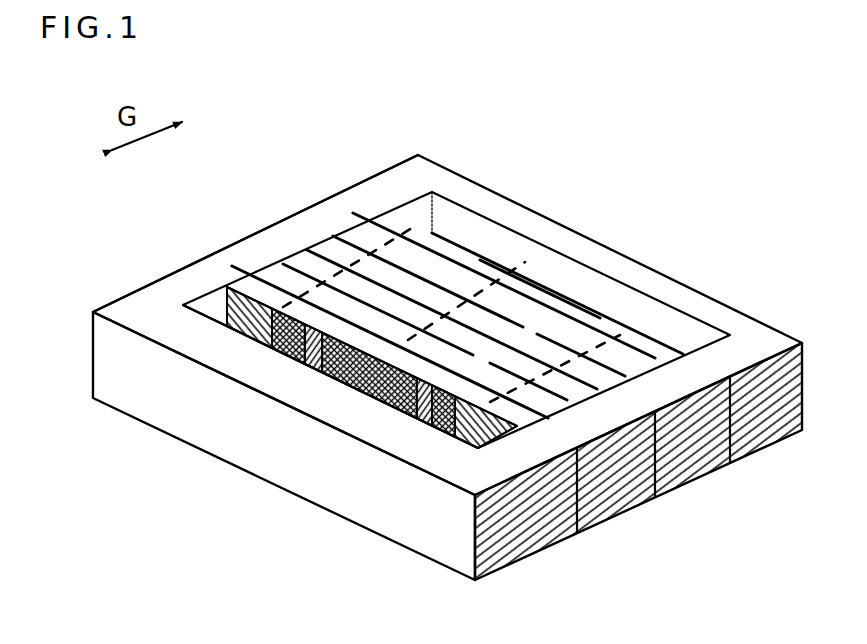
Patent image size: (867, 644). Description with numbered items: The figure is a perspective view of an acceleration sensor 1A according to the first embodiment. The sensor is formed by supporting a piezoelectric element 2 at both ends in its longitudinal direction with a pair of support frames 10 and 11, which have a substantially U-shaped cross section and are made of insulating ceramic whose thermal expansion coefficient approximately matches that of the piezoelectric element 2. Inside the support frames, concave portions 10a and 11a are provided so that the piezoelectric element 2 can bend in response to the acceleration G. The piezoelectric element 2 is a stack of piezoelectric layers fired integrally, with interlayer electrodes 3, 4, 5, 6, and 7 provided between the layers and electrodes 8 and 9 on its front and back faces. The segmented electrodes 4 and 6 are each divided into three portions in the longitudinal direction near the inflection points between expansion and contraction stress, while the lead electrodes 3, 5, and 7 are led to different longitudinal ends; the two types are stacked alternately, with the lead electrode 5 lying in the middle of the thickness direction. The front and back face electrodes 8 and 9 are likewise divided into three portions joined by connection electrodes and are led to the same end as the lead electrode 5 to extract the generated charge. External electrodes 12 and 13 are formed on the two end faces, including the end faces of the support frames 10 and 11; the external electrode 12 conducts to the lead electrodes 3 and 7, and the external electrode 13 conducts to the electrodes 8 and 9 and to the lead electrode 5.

The acceleration sensor 1A is at (418, 333).
The piezoelectric element 2 is at (452, 236).
The lead electrode 3 is at (353, 213).
The segmented electrode 4 is at (333, 236).
The lead electrode 5 is at (307, 250).
The segmented electrode 6 is at (283, 264).
The lead electrode 7 is at (232, 266).
The front face electrode 8 is at (480, 260).
The back face electrode 9 is at (338, 390).
The support frame 10 is at (672, 290).
The concave portion 10a is at (593, 287).
The support frame 11 is at (377, 515).
The concave portion 11a is at (227, 313).
The external electrode 12 is at (376, 170).
The external electrode 13 is at (693, 463).